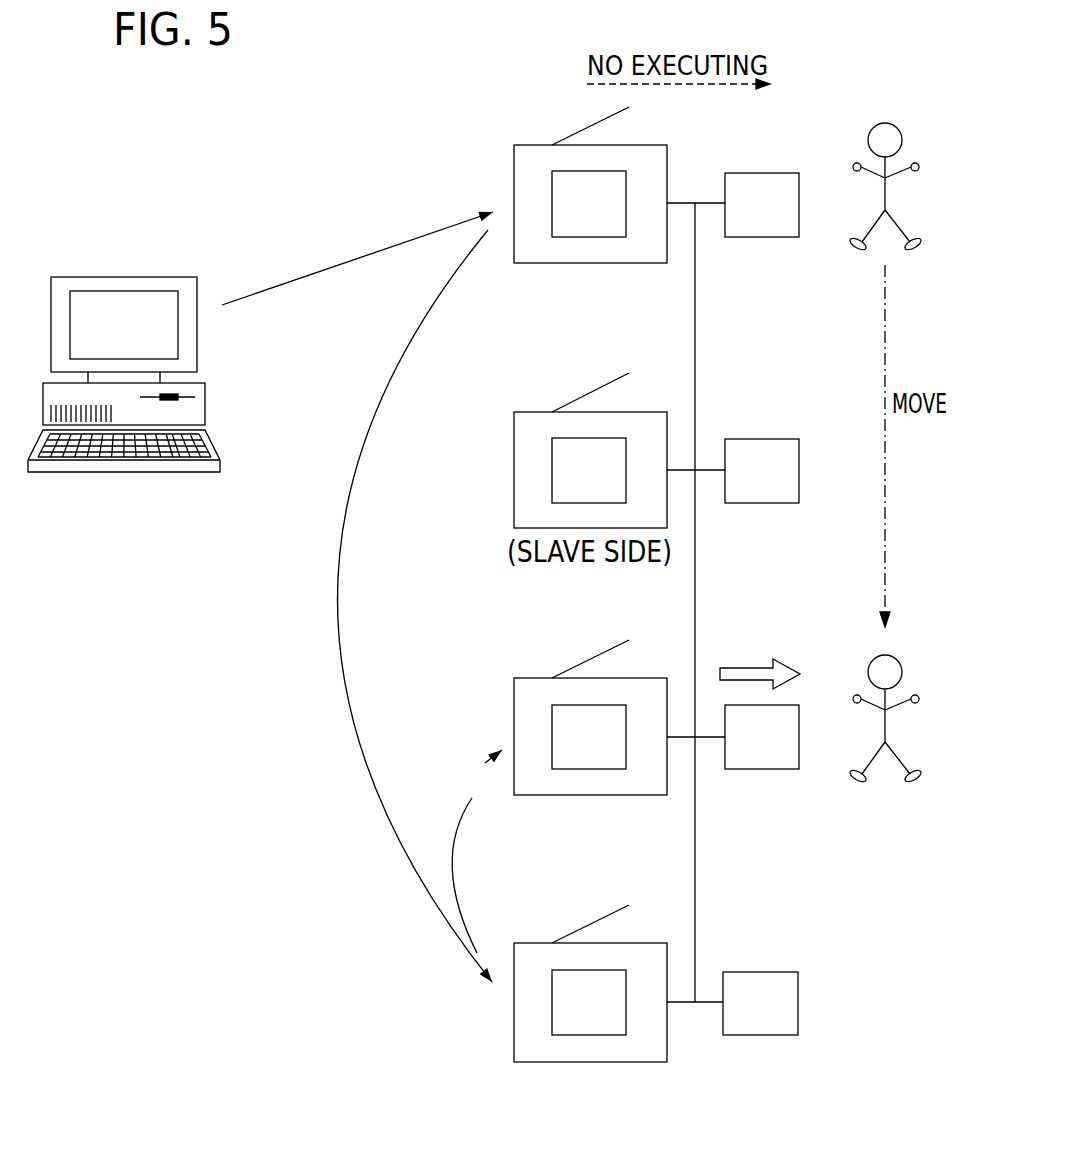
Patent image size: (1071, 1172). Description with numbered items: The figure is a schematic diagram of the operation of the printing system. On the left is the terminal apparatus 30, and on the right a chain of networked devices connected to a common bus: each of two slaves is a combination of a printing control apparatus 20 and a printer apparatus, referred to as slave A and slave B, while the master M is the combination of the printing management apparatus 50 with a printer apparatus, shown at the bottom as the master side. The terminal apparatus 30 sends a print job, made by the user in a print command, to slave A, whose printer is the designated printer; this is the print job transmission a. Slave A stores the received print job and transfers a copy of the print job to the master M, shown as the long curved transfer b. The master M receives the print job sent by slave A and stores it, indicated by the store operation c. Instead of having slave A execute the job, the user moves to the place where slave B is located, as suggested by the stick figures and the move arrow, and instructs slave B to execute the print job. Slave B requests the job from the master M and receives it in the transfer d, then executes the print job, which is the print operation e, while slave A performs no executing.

The terminal apparatus 30 is at (125, 478).
The printing control apparatus 20 is at (778, 237).
The printing management apparatus 50 is at (778, 1035).
The slave A is at (507, 128).
The slave B is at (507, 652).
The master M is at (497, 1047).
The print job sending a is at (283, 225).
The copy transfer of print job b is at (133, 655).
The storing of print job c is at (413, 1010).
The transfer of requested job d is at (433, 770).
The execution of print job e is at (800, 638).